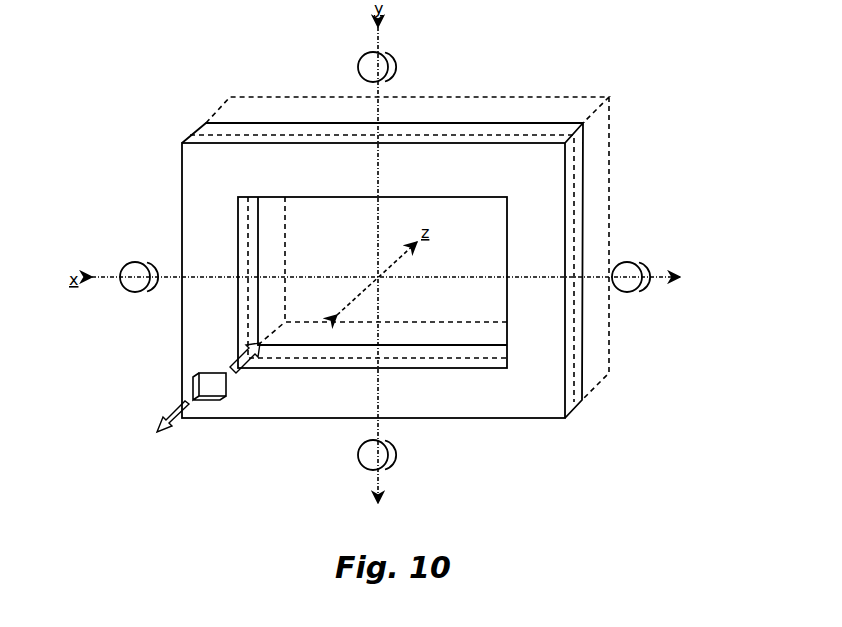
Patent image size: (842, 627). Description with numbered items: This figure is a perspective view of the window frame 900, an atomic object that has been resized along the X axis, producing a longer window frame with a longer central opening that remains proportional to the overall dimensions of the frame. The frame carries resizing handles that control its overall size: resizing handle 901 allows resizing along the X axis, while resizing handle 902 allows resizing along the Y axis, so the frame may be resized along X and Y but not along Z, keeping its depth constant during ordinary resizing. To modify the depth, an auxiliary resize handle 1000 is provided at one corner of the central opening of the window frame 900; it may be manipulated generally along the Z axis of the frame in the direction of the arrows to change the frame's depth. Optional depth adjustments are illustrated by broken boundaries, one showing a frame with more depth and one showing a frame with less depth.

The window frame atomic object 900 is at (168, 175).
The resizing handle 901 is at (648, 268).
The resizing handle 902 is at (398, 68).
The auxiliary resize handle 1000 is at (192, 389).